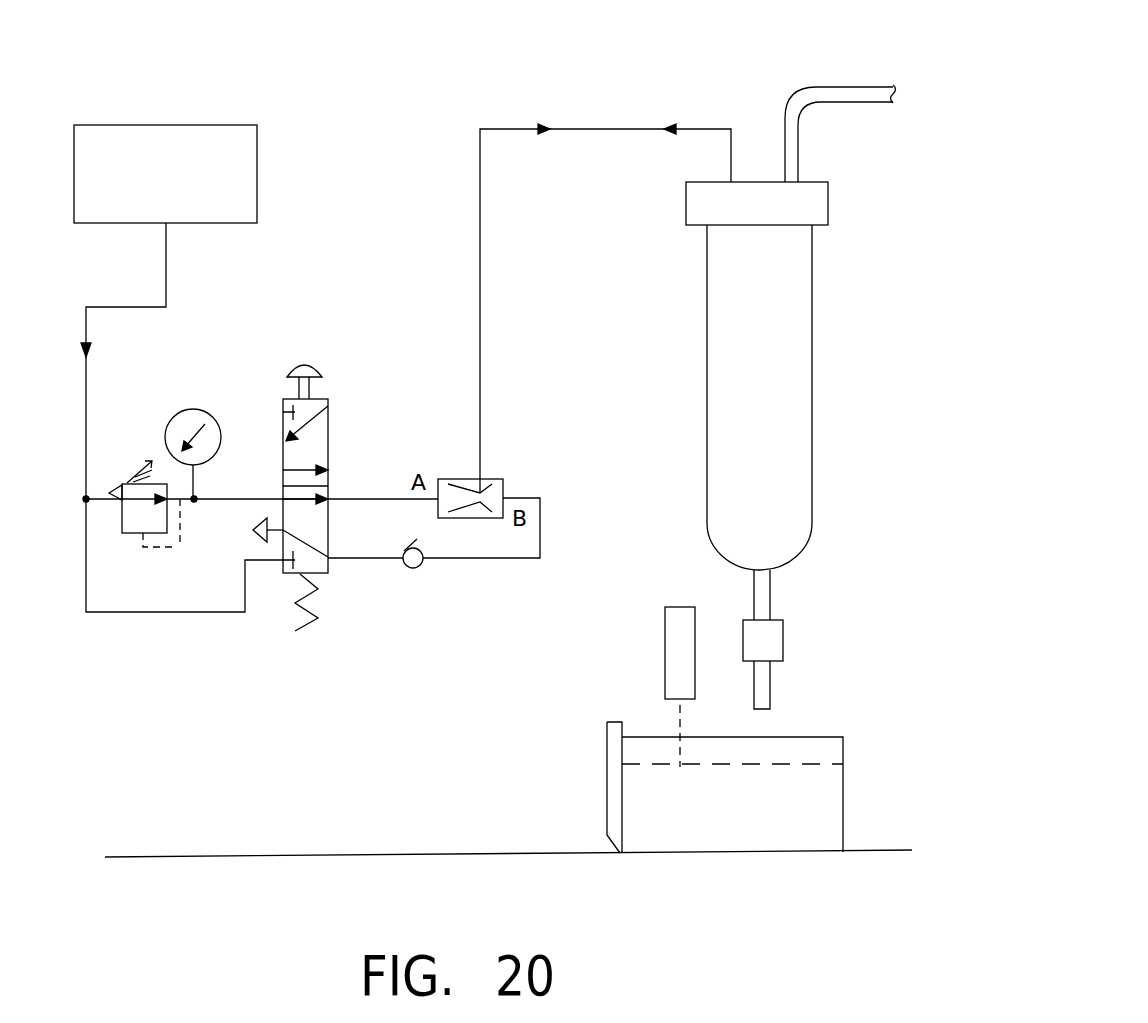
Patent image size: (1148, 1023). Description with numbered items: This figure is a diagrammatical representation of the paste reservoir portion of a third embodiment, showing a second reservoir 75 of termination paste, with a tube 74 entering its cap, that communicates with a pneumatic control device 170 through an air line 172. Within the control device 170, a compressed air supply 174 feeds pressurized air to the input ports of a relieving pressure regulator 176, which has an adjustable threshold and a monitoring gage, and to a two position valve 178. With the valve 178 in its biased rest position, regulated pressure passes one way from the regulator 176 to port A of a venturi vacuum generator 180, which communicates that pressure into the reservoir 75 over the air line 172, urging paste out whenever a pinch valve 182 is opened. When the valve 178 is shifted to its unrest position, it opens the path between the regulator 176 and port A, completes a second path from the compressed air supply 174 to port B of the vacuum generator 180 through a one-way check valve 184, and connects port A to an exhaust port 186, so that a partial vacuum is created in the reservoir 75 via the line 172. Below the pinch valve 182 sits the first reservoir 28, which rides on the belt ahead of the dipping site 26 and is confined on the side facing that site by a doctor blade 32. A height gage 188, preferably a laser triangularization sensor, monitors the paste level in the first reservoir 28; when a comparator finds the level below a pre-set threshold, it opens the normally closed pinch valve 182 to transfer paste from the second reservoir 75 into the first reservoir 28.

The pneumatic control device 170 is at (355, 166).
The compressed air supply 174 is at (215, 125).
The relieving pressure regulator 176 is at (128, 533).
The two position valve 178 is at (328, 406).
The venturi vacuum generator 180 is at (503, 485).
The air line 172 is at (620, 129).
The one-way check valve 184 is at (418, 566).
The exhaust port 186 is at (268, 543).
The air supply tube 74 is at (827, 85).
The reservoir 75 is at (707, 347).
The pinch valve 182 is at (783, 634).
The height gage 188 is at (665, 663).
The reservoir 28 is at (813, 748).
The doctor blade 32 is at (605, 760).
The dipping site 26 is at (313, 853).